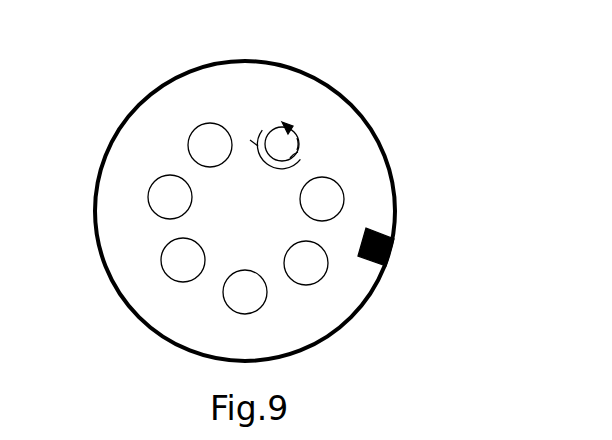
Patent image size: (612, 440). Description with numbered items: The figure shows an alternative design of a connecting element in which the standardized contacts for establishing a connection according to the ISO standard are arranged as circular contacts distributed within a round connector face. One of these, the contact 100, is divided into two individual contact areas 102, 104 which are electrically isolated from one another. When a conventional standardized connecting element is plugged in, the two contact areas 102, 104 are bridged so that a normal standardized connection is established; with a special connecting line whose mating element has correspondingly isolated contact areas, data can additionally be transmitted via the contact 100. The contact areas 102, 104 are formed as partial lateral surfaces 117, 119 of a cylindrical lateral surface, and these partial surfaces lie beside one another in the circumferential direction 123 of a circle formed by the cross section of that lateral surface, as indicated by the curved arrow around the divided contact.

The contact 100 is at (300, 108).
The contact area 102 is at (257, 140).
The contact area 104 is at (300, 148).
The partial lateral surface 117 is at (296, 160).
The partial lateral surface 119 is at (257, 143).
The circumferential direction 123 is at (266, 127).